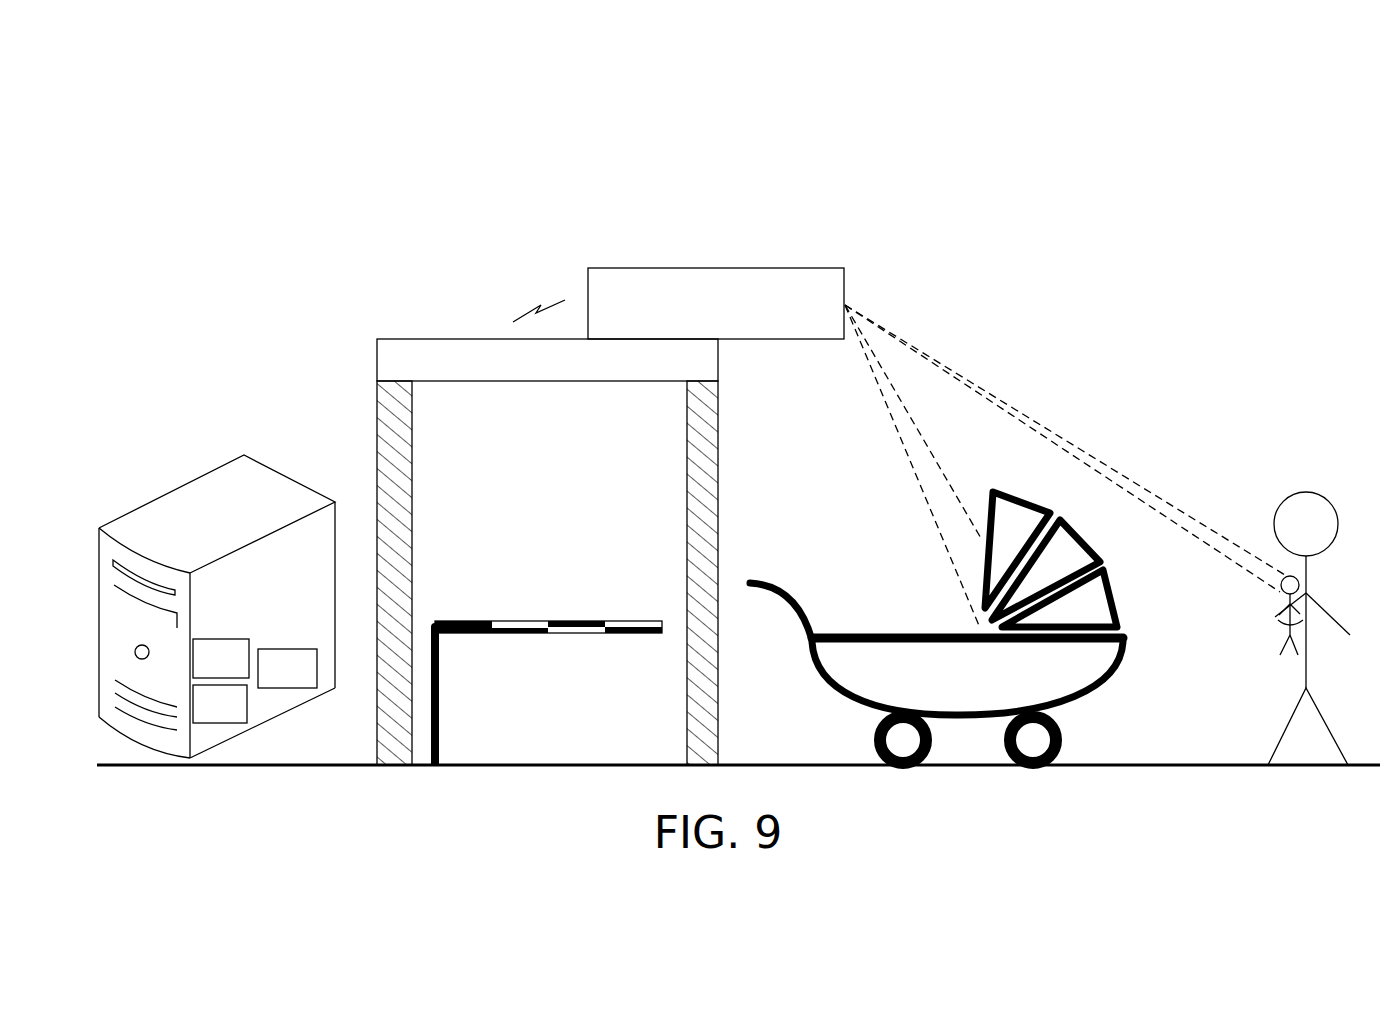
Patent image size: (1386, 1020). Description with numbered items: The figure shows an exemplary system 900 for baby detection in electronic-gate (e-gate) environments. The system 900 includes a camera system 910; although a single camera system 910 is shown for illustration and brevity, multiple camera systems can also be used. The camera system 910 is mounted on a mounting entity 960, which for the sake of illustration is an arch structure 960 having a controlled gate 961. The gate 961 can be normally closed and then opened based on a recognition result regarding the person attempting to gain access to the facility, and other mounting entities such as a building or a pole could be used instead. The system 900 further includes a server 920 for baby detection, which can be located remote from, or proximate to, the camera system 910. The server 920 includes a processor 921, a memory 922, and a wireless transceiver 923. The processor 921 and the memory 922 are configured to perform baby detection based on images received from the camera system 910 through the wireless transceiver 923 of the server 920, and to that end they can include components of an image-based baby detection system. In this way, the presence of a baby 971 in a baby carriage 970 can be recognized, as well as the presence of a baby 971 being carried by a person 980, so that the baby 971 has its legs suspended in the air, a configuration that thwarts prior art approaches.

The system 900 is at (219, 108).
The camera system 910 is at (693, 334).
The server 920 is at (193, 527).
The processor 921 is at (199, 671).
The memory 922 is at (198, 711).
The wireless transceiver 923 is at (265, 681).
The mounting entity 960 is at (395, 318).
The gate 961 is at (544, 604).
The baby carriage 970 is at (942, 694).
The baby 971 is at (896, 521).
The person 980 is at (1306, 492).